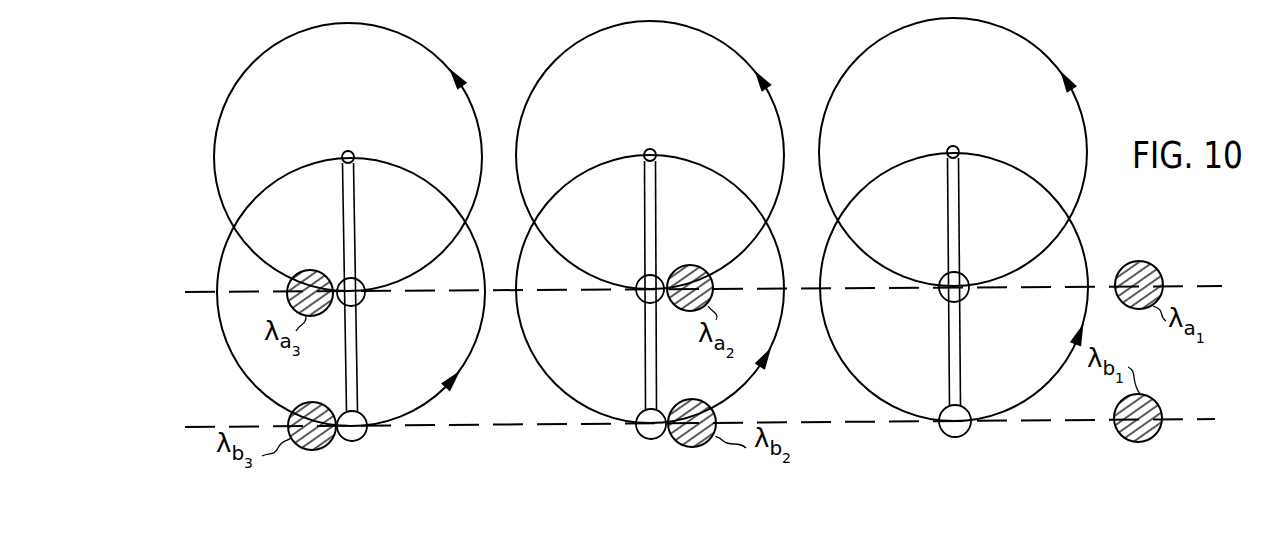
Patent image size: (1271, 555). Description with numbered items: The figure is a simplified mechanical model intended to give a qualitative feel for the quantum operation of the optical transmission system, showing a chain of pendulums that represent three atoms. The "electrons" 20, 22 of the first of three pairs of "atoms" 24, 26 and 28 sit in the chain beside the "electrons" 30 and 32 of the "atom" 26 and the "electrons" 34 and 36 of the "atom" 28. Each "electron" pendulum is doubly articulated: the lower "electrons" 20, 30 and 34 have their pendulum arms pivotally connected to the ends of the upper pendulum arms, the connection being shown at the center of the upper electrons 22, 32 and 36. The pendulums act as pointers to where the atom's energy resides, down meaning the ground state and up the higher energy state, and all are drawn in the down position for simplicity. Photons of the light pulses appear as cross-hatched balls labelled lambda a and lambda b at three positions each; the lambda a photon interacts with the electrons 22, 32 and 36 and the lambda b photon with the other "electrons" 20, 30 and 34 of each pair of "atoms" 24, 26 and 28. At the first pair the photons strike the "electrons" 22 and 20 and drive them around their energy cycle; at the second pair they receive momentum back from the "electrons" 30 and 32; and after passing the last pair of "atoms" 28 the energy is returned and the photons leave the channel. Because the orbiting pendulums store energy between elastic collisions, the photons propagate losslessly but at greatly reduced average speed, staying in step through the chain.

The electron 20 is at (366, 412).
The electron 22 is at (362, 281).
The atom 24 is at (442, 37).
The atom 26 is at (741, 32).
The atom 28 is at (1066, 32).
The electron 30 is at (646, 410).
The electron 32 is at (640, 275).
The electron 34 is at (969, 408).
The electron 36 is at (967, 272).